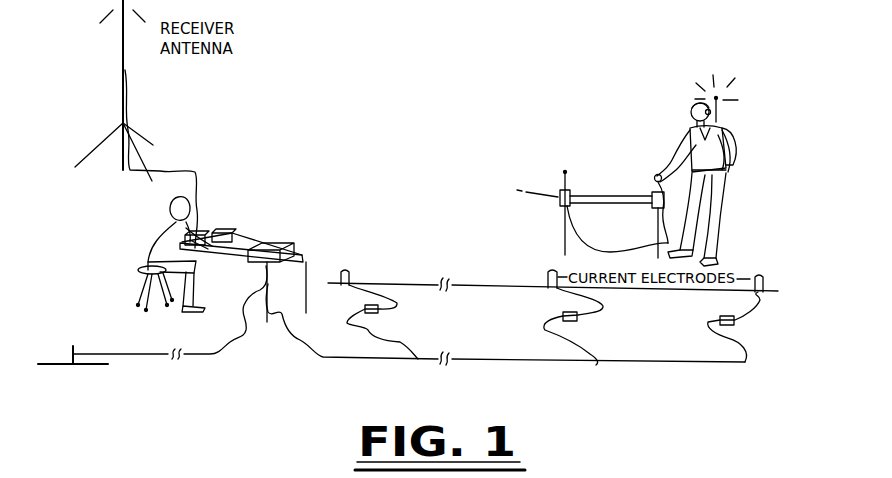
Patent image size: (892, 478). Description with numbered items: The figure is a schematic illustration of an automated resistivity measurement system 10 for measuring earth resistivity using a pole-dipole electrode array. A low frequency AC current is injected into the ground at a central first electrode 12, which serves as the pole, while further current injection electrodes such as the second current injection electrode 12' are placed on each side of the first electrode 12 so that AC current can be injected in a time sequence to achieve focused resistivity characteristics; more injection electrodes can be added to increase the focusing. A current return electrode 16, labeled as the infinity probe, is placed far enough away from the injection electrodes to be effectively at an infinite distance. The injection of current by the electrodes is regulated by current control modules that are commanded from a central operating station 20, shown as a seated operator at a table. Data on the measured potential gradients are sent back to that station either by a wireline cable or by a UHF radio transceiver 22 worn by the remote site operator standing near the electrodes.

The automated resistivity measurement system 10 is at (472, 152).
The first electrode 12 is at (559, 304).
The second current injection electrode 12' is at (379, 301).
The current return electrode 16 is at (73, 346).
The central operating station 20 is at (259, 226).
The UHF radio transceiver 22 is at (730, 138).